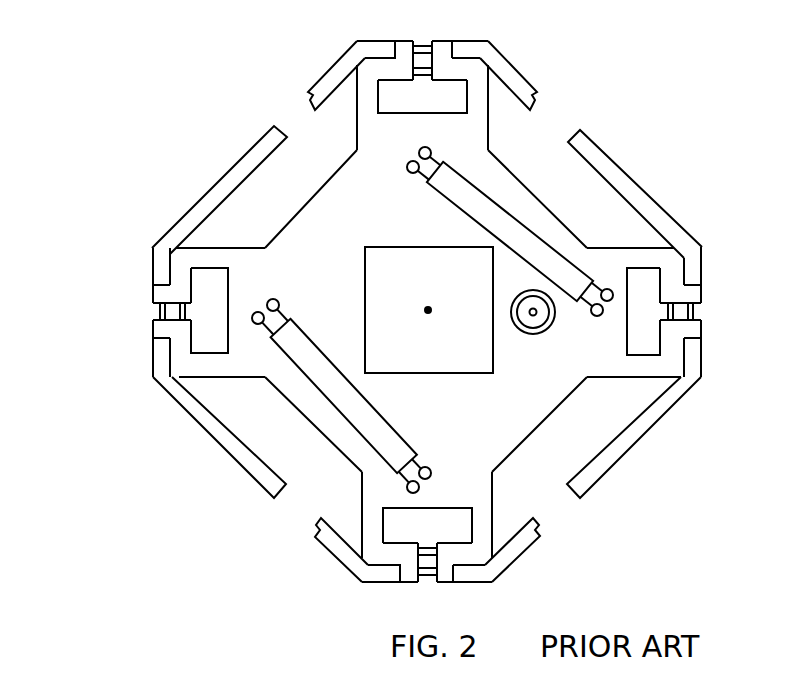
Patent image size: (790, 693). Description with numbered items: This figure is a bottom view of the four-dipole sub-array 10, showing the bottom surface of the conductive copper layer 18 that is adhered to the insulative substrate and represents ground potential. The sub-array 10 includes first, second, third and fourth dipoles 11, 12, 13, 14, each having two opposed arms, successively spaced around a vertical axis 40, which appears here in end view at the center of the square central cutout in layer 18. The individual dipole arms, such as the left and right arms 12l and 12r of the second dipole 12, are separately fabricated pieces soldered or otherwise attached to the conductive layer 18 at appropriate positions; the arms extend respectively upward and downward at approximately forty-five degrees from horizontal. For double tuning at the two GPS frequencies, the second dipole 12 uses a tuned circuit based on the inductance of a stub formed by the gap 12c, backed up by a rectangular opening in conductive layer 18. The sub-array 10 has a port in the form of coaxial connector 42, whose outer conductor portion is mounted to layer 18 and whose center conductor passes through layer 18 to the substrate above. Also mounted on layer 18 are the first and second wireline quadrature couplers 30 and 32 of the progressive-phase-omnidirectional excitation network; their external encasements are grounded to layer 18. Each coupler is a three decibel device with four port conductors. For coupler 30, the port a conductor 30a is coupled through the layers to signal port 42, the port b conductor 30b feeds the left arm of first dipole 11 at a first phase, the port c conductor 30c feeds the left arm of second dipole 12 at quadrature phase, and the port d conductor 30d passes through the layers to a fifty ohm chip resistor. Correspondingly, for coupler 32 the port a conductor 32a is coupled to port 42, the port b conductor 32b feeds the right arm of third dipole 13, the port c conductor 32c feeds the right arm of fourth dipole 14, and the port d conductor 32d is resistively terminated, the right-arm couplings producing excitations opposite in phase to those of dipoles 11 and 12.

The four-dipole sub-array 10 is at (606, 76).
The first dipole 11 is at (480, 583).
The second dipole 12 is at (148, 318).
The gap 12c is at (118, 318).
The left arm of second dipole 12l is at (230, 173).
The right arm of second dipole 12r is at (220, 443).
The third dipole 13 is at (480, 38).
The fourth dipole 14 is at (707, 257).
The conductive layer 18 is at (446, 404).
The first quadrature coupler 30 is at (343, 330).
The port a conductor of coupler 30 30a is at (418, 467).
The port b conductor of coupler 30 30b is at (403, 477).
The port c conductor of coupler 30 30c is at (282, 308).
The port d conductor of coupler 30 30d is at (268, 327).
The second quadrature coupler 32 is at (455, 208).
The port a conductor of coupler 32 32a is at (423, 177).
The port b conductor of coupler 32 32b is at (438, 160).
The port c conductor of coupler 32 32c is at (588, 298).
The port d conductor of coupler 32 32d is at (598, 291).
The vertical axis 40 is at (430, 309).
The coaxial connector 42 is at (530, 334).